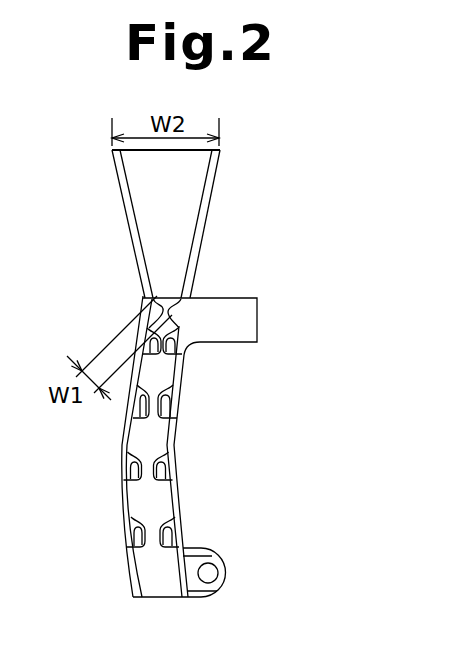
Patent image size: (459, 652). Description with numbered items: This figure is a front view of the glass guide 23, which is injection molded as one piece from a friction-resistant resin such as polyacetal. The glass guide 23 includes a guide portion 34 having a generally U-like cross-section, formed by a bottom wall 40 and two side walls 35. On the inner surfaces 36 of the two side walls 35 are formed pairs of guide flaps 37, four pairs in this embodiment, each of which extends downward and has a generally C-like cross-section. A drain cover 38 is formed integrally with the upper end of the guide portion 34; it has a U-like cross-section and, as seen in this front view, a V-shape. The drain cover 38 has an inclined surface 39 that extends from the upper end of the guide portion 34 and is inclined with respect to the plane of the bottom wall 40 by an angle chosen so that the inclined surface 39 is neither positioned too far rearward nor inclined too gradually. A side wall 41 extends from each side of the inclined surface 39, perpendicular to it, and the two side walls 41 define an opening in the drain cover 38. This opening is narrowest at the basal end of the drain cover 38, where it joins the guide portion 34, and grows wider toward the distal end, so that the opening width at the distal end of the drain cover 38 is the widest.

The glass guide 23 is at (297, 212).
The guide portion 34 is at (174, 406).
The side walls 35 is at (167, 490).
The inner surfaces 36 is at (168, 368).
The guide flaps 37 is at (140, 446).
The drain cover 38 is at (200, 217).
The inclined surface 39 is at (180, 170).
The bottom wall 40 is at (155, 594).
The side walls 41 is at (195, 254).